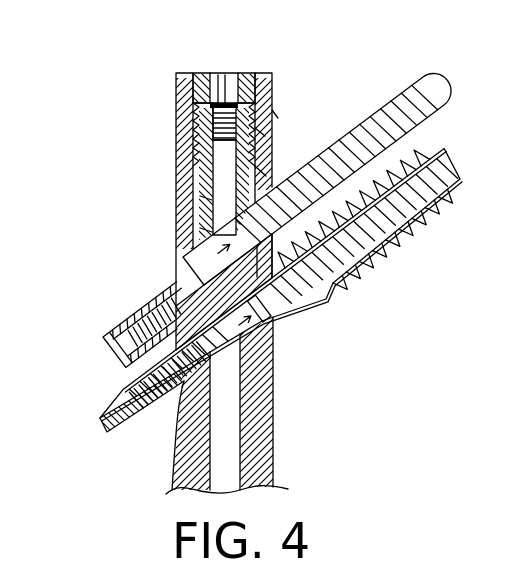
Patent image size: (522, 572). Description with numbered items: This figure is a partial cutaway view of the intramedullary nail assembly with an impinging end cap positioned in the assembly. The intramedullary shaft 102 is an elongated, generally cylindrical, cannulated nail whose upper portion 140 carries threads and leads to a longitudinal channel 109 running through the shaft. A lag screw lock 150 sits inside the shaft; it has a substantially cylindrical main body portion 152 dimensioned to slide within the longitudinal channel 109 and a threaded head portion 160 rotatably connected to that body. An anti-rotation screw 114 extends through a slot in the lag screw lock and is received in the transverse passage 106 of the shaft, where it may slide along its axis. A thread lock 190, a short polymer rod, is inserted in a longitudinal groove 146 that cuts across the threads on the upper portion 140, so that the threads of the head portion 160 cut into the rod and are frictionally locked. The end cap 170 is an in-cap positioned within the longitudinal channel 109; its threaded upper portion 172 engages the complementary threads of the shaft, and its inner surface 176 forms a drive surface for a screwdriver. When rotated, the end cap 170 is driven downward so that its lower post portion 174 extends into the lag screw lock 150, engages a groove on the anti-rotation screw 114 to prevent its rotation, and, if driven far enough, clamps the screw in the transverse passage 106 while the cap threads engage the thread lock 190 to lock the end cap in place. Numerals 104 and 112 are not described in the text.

The intramedullary shaft 102 is at (172, 476).
The shank 104 is at (255, 361).
The transverse passage 106 is at (200, 273).
The longitudinal channel 109 is at (232, 440).
The rod 112 is at (314, 269).
The anti-rotation screw 114 is at (138, 318).
The upper portion 140 is at (178, 150).
The longitudinal groove 146 is at (277, 116).
The lag screw lock 150 is at (200, 202).
The main body portion 152 is at (200, 233).
The threaded head portion 160 is at (197, 184).
The end cap 170 is at (178, 88).
The threaded upper portion 172 is at (206, 122).
The lower post portion 174 is at (260, 172).
The inner surface 176 is at (231, 86).
The thread lock 190 is at (262, 132).